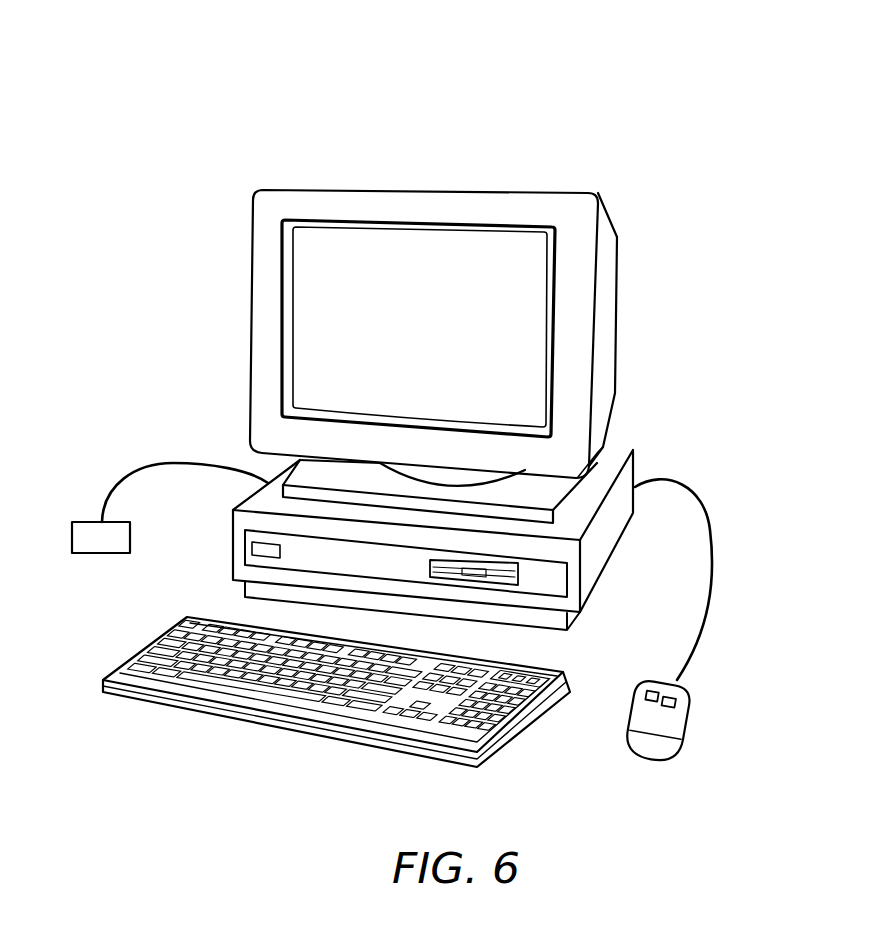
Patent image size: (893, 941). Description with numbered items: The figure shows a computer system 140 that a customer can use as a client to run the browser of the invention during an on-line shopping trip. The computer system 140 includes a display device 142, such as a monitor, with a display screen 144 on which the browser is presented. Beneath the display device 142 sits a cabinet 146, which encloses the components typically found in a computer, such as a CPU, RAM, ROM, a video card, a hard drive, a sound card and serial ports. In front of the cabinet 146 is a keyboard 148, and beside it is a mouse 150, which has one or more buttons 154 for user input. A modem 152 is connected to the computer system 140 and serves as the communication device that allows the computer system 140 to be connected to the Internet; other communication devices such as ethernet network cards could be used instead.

The computer system 140 is at (657, 73).
The display device 142 is at (473, 307).
The display screen 144 is at (447, 243).
The cabinet 146 is at (632, 447).
The keyboard 148 is at (335, 742).
The mouse 150 is at (673, 638).
The modem 152 is at (105, 555).
The buttons 154 is at (683, 707).